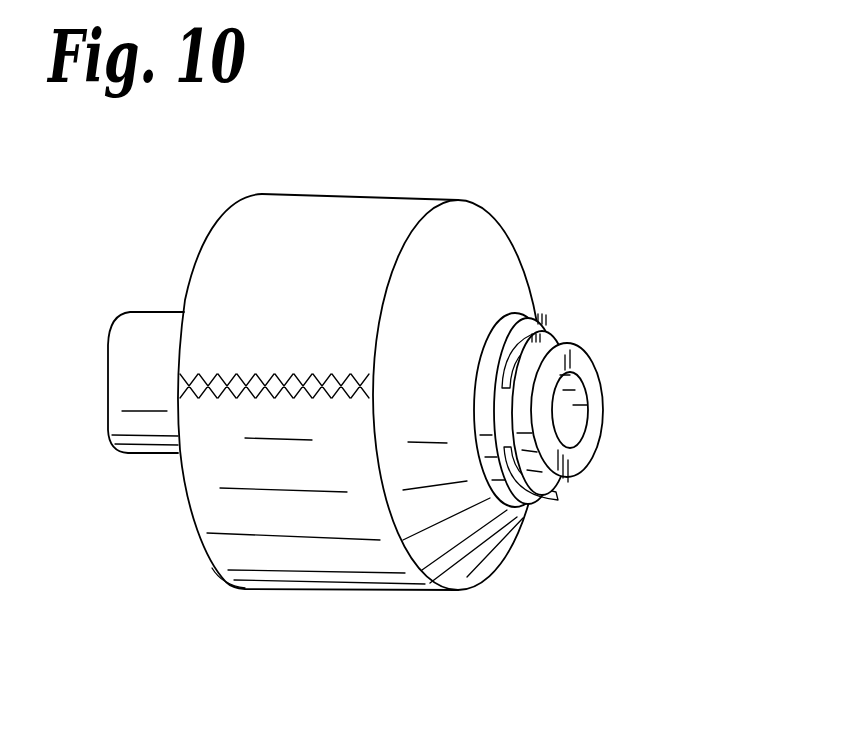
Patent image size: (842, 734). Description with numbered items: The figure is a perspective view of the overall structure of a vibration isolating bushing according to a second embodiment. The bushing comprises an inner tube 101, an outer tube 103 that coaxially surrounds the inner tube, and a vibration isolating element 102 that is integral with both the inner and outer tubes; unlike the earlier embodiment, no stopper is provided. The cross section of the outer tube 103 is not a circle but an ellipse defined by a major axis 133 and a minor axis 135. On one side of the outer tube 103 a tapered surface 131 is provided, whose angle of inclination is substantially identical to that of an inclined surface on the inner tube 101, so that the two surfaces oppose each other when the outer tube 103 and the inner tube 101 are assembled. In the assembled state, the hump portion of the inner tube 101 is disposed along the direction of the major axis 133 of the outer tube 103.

The inner tube 101 is at (143, 455).
The vibration isolating element 102 is at (562, 333).
The outer tube 103 is at (223, 580).
The tapered surface 131 is at (507, 555).
The major axis 133 is at (352, 197).
The minor axis 135 is at (230, 372).